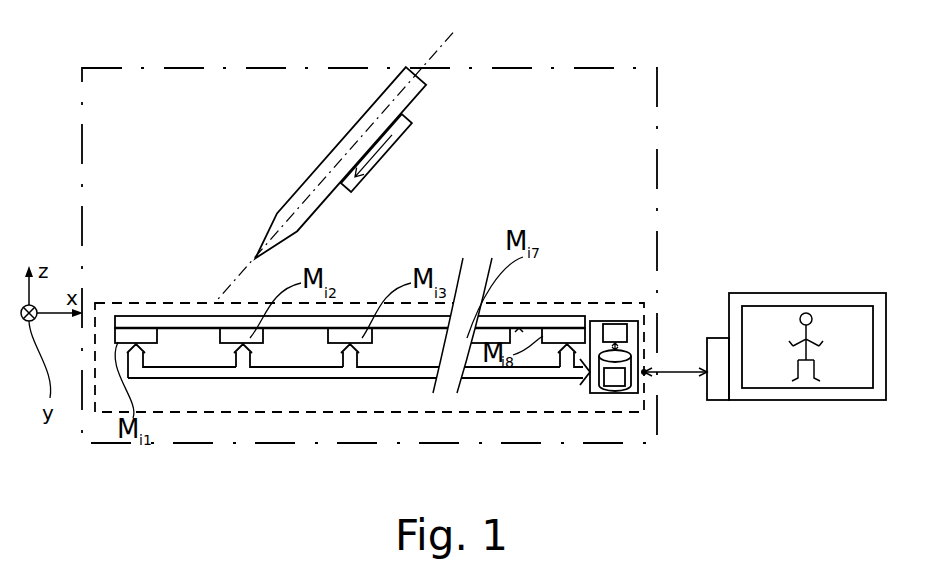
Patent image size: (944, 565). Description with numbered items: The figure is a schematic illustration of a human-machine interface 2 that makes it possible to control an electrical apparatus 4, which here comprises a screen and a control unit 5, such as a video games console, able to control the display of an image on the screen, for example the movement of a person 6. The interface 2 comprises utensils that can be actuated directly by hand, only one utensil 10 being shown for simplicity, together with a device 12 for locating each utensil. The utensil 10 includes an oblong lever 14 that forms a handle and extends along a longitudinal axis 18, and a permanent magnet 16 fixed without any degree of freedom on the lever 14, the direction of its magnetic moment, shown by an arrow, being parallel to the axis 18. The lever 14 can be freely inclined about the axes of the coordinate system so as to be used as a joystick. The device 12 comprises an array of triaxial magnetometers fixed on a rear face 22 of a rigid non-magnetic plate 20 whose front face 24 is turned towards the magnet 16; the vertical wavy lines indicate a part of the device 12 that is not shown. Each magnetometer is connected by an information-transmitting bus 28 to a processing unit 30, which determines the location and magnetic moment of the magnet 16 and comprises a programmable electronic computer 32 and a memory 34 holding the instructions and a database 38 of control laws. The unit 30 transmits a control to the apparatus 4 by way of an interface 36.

The human-machine interface 2 is at (72, 66).
The electrical apparatus 4 is at (765, 285).
The control unit 5 is at (718, 392).
The person 6 is at (811, 315).
The utensil 10 is at (382, 166).
The device for locating each utensil 12 is at (162, 296).
The lever 14 is at (410, 88).
The permanent magnet 16 is at (402, 137).
The longitudinal axis 18 is at (440, 50).
The rigid plate 20 is at (573, 308).
The rear face 22 is at (523, 332).
The front face 24 is at (133, 316).
The information-transmitting bus 28 is at (241, 380).
The processing unit 30 is at (599, 367).
The programmable electronic computer 32 is at (627, 333).
The memory 34 is at (641, 390).
The interface 36 is at (646, 371).
The database 38 is at (613, 392).